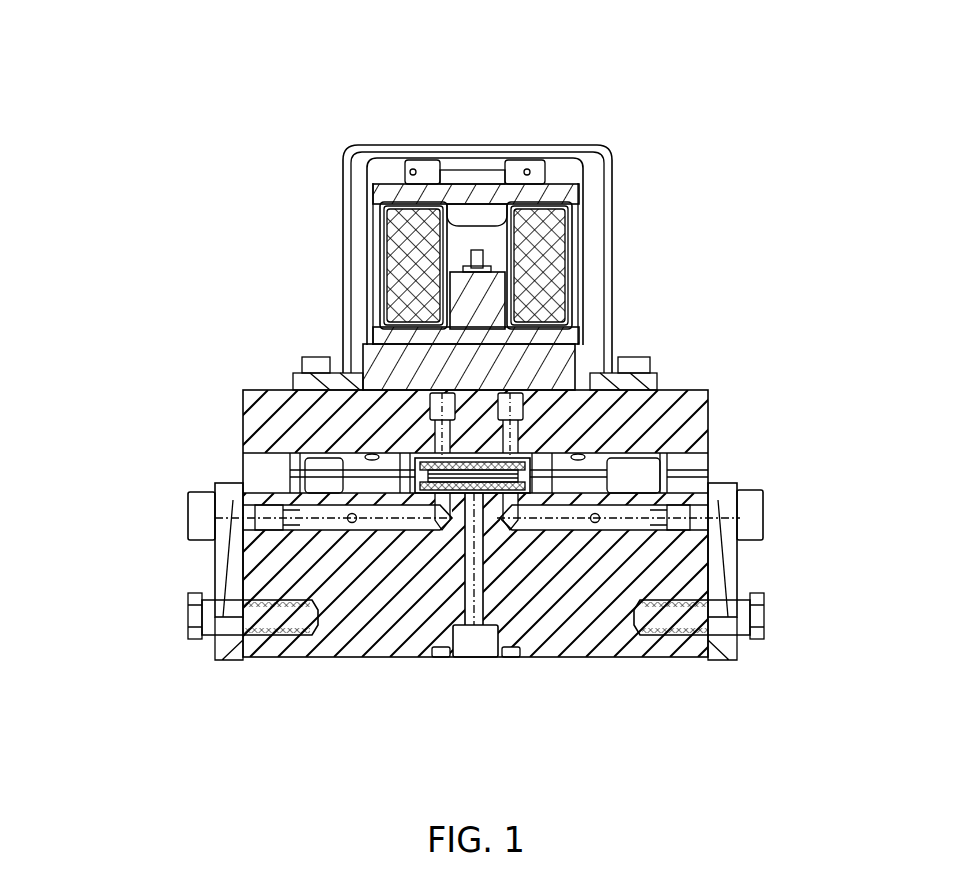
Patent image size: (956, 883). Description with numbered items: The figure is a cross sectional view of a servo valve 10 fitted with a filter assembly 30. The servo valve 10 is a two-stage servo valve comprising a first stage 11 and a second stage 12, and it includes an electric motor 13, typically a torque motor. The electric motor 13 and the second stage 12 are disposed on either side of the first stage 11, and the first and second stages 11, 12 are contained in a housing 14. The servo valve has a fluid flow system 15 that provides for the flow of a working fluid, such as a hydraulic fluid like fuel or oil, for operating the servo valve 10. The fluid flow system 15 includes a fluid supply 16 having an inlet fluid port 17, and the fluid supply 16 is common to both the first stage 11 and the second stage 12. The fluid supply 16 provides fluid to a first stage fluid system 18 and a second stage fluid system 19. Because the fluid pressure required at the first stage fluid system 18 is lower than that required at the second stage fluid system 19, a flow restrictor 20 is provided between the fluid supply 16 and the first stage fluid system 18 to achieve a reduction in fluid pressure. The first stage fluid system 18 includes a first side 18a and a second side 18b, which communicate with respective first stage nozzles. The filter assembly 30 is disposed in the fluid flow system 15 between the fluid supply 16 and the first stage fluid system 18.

The servo valve 10 is at (661, 92).
The first stage 11 is at (178, 372).
The second stage 12 is at (158, 553).
The electric motor 13 is at (383, 254).
The housing 14 is at (690, 422).
The fluid flow system 15 is at (640, 513).
The fluid supply 16 is at (478, 600).
The inlet fluid port 17 is at (484, 645).
The first stage fluid system 18 is at (386, 478).
The first side 18a is at (356, 470).
The second side 18b is at (605, 505).
The second stage fluid system 19 is at (350, 522).
The flow restrictor 20 is at (587, 487).
The filter assembly 30 is at (545, 432).